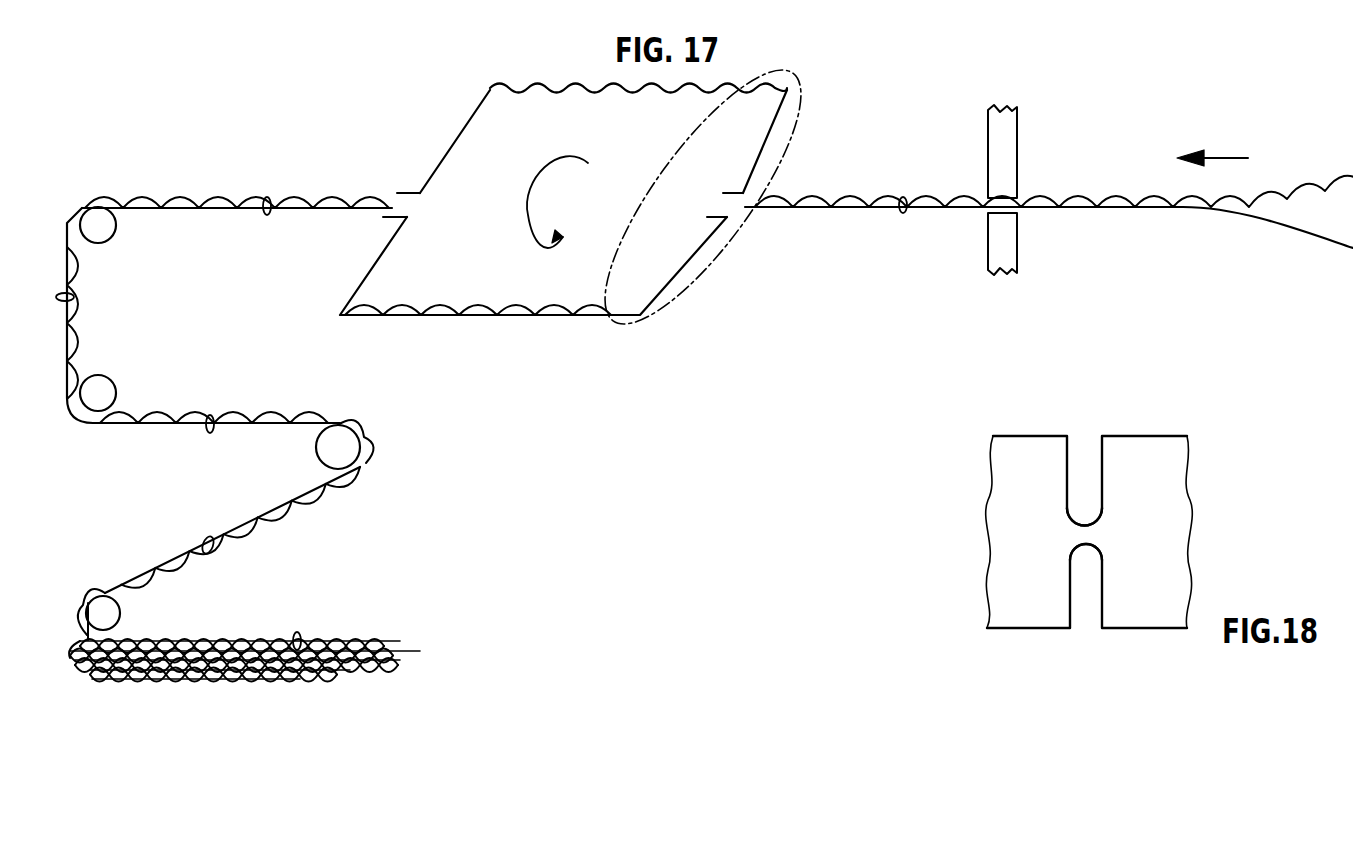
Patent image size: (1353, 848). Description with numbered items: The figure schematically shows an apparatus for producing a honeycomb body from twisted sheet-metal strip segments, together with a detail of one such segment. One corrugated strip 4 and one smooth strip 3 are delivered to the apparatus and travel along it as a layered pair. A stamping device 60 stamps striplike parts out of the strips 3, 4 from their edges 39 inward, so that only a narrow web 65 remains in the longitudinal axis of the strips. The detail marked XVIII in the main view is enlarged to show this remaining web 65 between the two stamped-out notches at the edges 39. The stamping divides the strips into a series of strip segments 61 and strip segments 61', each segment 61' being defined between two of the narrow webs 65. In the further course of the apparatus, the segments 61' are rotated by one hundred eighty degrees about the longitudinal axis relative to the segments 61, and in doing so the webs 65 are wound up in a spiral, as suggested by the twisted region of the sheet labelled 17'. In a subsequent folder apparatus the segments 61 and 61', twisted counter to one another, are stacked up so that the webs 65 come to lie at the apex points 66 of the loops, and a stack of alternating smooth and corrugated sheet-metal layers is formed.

In FIG. 17, the smooth strip 3 is at (180, 211).
In FIG. 17, the corrugated strip 4 is at (213, 197).
In FIG. 17, the web 65 is at (75, 212).
In FIG. 18, the web 65 is at (1097, 533).
In FIG. 17, the strip segment 61 is at (555, 423).
In FIG. 17, the strip segment 61' is at (169, 423).
In FIG. 17, the apex point 66 is at (425, 646).
In FIG. 17, the sheet 17' is at (563, 234).
In FIG. 17, the detail circle XVIII is at (725, 272).
In FIG. 17, the stamping device 60 is at (1005, 122).
In FIG. 18, the edge 39 is at (1150, 436).